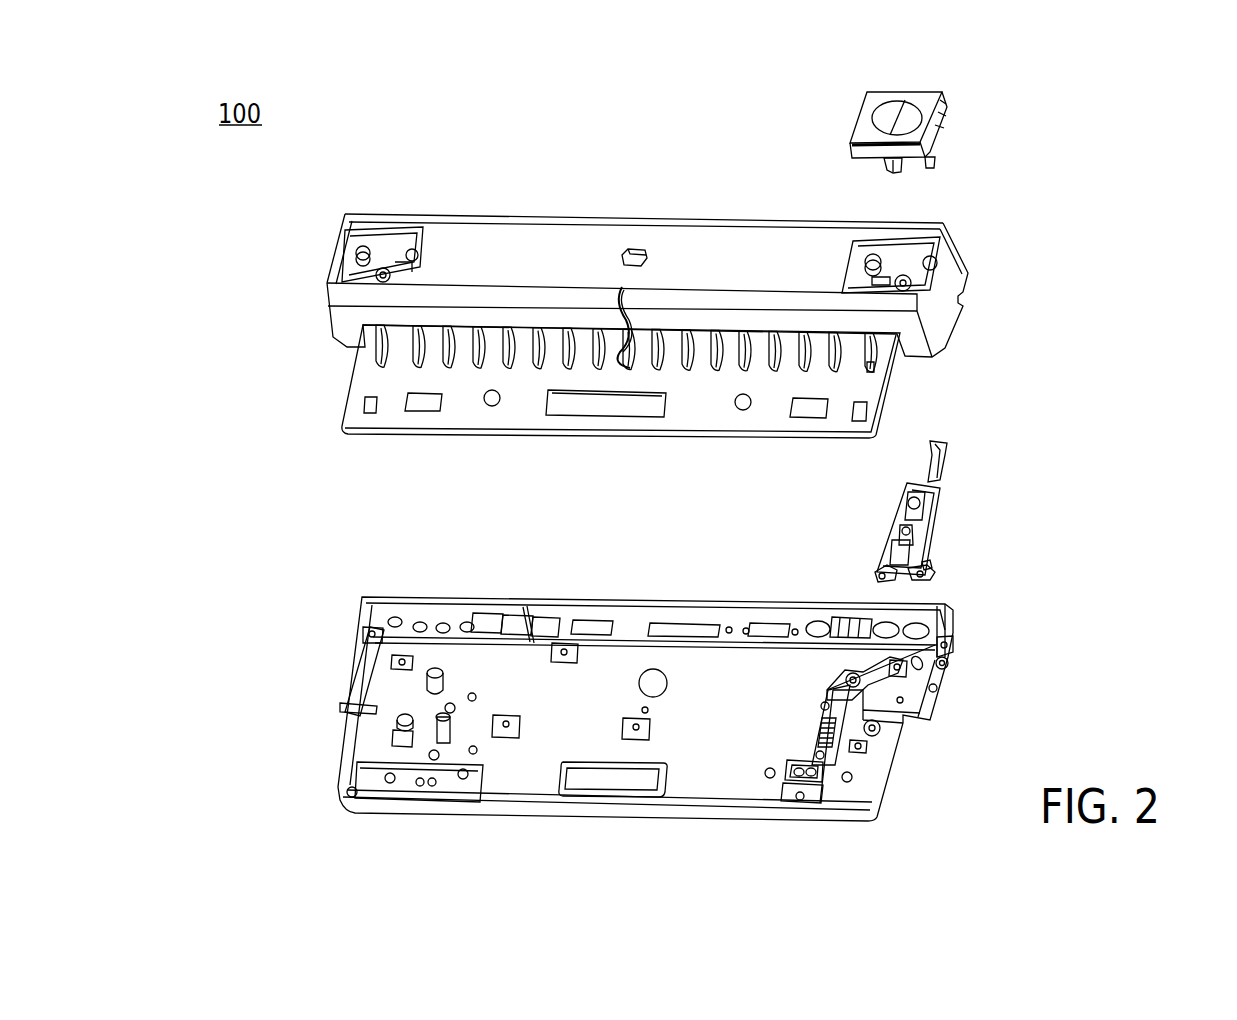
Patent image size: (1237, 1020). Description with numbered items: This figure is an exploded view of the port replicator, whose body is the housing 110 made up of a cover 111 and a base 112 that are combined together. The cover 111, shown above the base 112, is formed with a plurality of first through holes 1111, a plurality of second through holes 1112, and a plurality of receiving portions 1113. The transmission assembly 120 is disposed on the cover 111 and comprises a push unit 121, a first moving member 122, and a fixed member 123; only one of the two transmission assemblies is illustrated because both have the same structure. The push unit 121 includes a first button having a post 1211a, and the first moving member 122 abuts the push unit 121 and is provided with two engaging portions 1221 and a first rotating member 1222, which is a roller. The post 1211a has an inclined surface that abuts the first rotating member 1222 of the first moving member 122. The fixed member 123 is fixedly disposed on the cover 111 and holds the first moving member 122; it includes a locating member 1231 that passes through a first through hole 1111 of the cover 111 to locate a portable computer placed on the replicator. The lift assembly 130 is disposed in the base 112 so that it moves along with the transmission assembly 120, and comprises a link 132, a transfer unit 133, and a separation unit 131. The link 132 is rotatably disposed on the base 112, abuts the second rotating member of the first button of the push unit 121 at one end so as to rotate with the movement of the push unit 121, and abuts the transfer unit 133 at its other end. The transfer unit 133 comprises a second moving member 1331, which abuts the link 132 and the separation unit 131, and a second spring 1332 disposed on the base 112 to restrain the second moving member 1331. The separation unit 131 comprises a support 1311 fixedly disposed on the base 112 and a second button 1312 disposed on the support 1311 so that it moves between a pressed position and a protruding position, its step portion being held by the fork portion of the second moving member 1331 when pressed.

The housing 110 is at (262, 455).
The cover 111 is at (345, 332).
The first through holes 1111 is at (868, 411).
The second through holes 1112 is at (808, 412).
The receiving portions 1113 is at (905, 262).
The base 112 is at (358, 658).
The transmission assembly 120 is at (1026, 140).
The push unit 121 is at (920, 130).
The post 1211a is at (883, 165).
The first moving member 122 is at (938, 495).
The engaging portions 1221 is at (905, 498).
The first rotating member 1222 is at (928, 447).
The fixed member 123 is at (928, 562).
The locating member 1231 is at (900, 543).
The lift assembly 130 is at (1020, 628).
The separation unit 131 is at (855, 750).
The support 1311 is at (785, 768).
The second button 1312 is at (835, 786).
The link 132 is at (945, 640).
The transfer unit 133 is at (865, 695).
The second moving member 1331 is at (822, 710).
The second spring 1332 is at (818, 728).